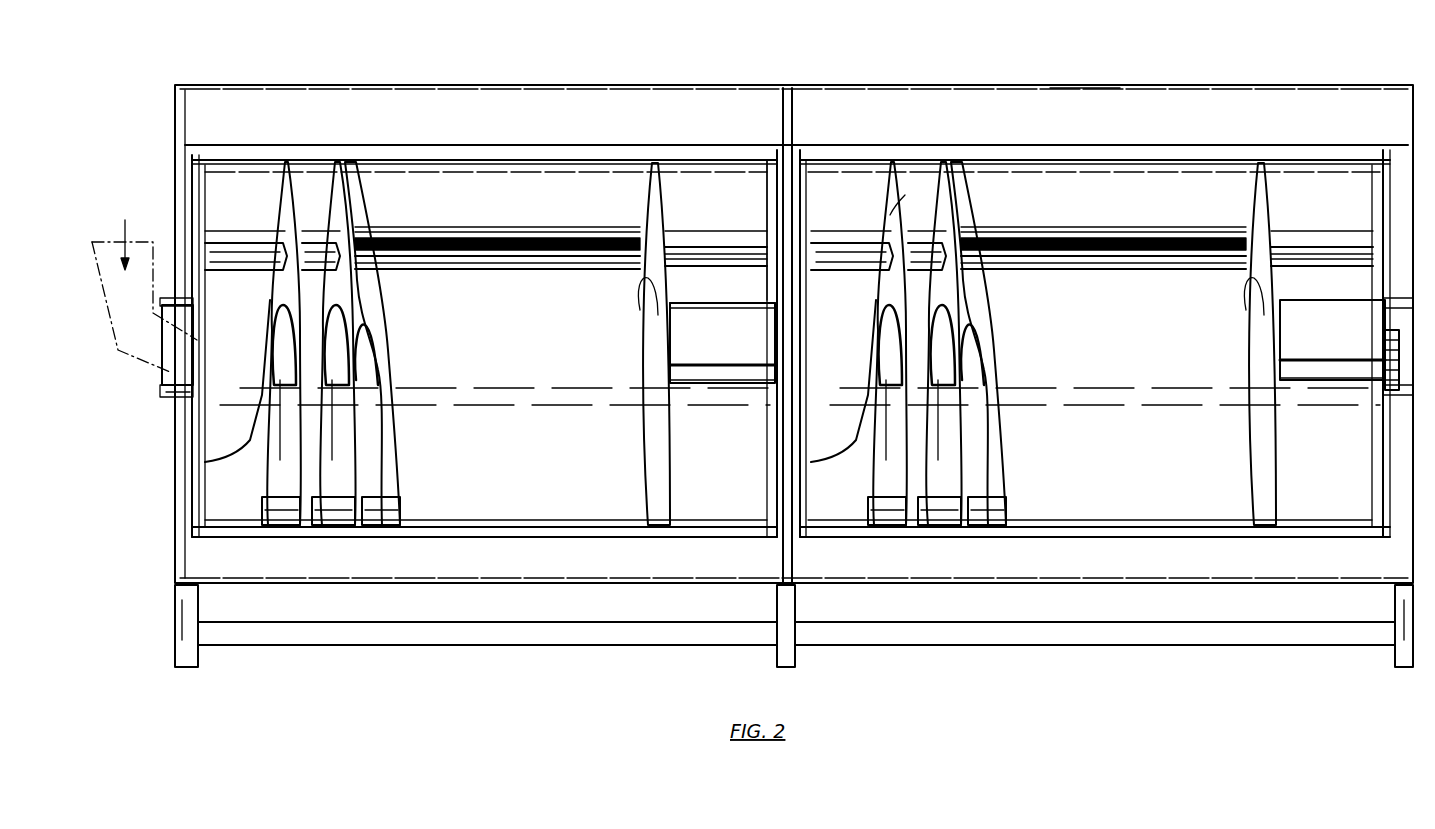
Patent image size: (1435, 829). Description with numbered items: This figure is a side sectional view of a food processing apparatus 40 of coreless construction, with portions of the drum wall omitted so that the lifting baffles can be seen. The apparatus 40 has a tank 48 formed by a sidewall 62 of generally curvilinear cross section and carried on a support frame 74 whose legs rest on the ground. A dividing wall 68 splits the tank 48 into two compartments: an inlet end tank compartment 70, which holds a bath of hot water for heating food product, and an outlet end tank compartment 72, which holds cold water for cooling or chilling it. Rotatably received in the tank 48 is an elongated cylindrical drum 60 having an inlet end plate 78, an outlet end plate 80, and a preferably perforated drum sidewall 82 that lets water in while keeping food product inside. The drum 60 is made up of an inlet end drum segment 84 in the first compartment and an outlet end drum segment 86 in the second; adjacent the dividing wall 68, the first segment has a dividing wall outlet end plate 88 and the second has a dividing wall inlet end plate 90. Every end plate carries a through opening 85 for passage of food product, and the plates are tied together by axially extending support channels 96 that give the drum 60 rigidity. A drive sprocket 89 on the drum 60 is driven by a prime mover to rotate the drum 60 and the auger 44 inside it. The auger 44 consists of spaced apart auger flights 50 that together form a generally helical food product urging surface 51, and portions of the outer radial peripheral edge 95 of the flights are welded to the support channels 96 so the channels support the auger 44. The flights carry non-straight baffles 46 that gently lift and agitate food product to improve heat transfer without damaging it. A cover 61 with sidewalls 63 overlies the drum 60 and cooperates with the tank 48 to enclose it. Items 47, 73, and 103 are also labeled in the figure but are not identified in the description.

The food processing apparatus 40 is at (885, 74).
The auger 44 is at (1207, 120).
The baffles 46 is at (223, 253).
The paddle edge 47 is at (222, 437).
The tank 48 is at (1091, 588).
The auger flights 50 is at (340, 195).
The food product urging surface 51 is at (375, 520).
The drum 60 is at (1165, 540).
The cover 61 is at (1092, 55).
The sidewall 62 is at (292, 582).
The sidewalls 63 is at (175, 95).
The dividing wall 68 is at (787, 566).
The inlet end tank compartment 70 is at (527, 560).
The outlet end tank compartment 72 is at (1092, 555).
The legs 73 is at (185, 668).
The support frame 74 is at (526, 648).
The inlet end plate 78 is at (192, 172).
The outlet end plate 80 is at (1355, 175).
The drum sidewall 82 is at (488, 178).
The inlet end drum segment 84 is at (495, 377).
The through opening 85 is at (160, 378).
The outlet end drum segment 86 is at (1105, 377).
The dividing wall outlet end plate 88 is at (779, 160).
The drive sprocket 89 is at (1385, 340).
The dividing wall inlet end plate 90 is at (800, 160).
The outer radial peripheral edge 95 is at (906, 192).
The support channels 96 is at (560, 205).
The inlet hopper outline 103 is at (95, 240).